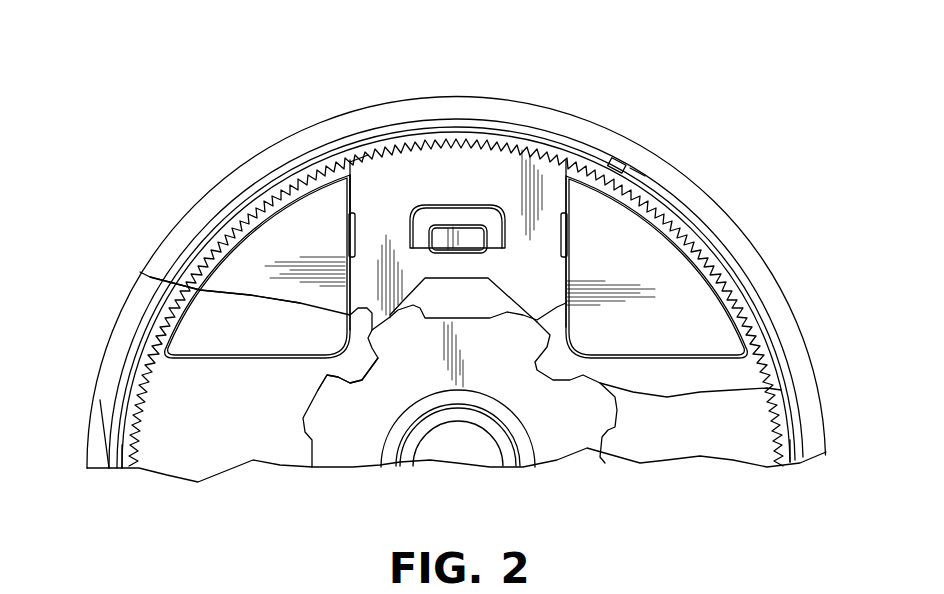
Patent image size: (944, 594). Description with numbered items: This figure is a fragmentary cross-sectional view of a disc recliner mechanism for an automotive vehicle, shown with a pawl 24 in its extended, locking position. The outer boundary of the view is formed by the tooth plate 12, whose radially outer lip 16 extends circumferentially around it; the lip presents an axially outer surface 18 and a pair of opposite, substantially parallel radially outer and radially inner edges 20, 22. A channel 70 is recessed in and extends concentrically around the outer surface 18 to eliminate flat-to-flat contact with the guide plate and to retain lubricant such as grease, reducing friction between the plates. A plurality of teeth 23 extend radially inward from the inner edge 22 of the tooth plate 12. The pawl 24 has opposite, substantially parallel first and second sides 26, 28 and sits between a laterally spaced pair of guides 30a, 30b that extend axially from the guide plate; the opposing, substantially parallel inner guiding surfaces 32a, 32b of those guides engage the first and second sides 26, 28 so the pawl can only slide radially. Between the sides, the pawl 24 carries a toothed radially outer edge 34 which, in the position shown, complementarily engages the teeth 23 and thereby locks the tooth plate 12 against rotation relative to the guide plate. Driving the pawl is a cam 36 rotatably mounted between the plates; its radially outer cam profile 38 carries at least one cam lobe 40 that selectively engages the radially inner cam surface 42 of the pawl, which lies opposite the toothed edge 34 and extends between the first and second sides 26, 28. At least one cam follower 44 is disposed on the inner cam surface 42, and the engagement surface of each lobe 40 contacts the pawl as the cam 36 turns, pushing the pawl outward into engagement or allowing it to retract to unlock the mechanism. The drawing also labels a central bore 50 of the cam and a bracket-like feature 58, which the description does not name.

The tooth plate 12 is at (100, 189).
The radially outer lip 16 is at (573, 130).
The axially outer surface 18 is at (107, 417).
The radially outer edge 20 is at (537, 105).
The radially inner edge 22 is at (783, 447).
The teeth 23 is at (143, 470).
The pawl 24 is at (488, 132).
The first side 26 is at (348, 203).
The second side 28 is at (543, 280).
The guide 30a is at (233, 341).
The guide 30b is at (638, 343).
The inner guiding surface 32a is at (372, 292).
The inner guiding surface 32b is at (567, 288).
The toothed radially outer edge 34 is at (368, 155).
The cam 36 is at (580, 475).
The radially outer cam profile 38 is at (412, 335).
The cam lobe 40 is at (150, 277).
The radially inner cam surface 42 is at (482, 292).
The cam follower 44 is at (347, 265).
The bore 50 is at (400, 457).
The bracket 58 is at (445, 222).
The channel 70 is at (773, 332).